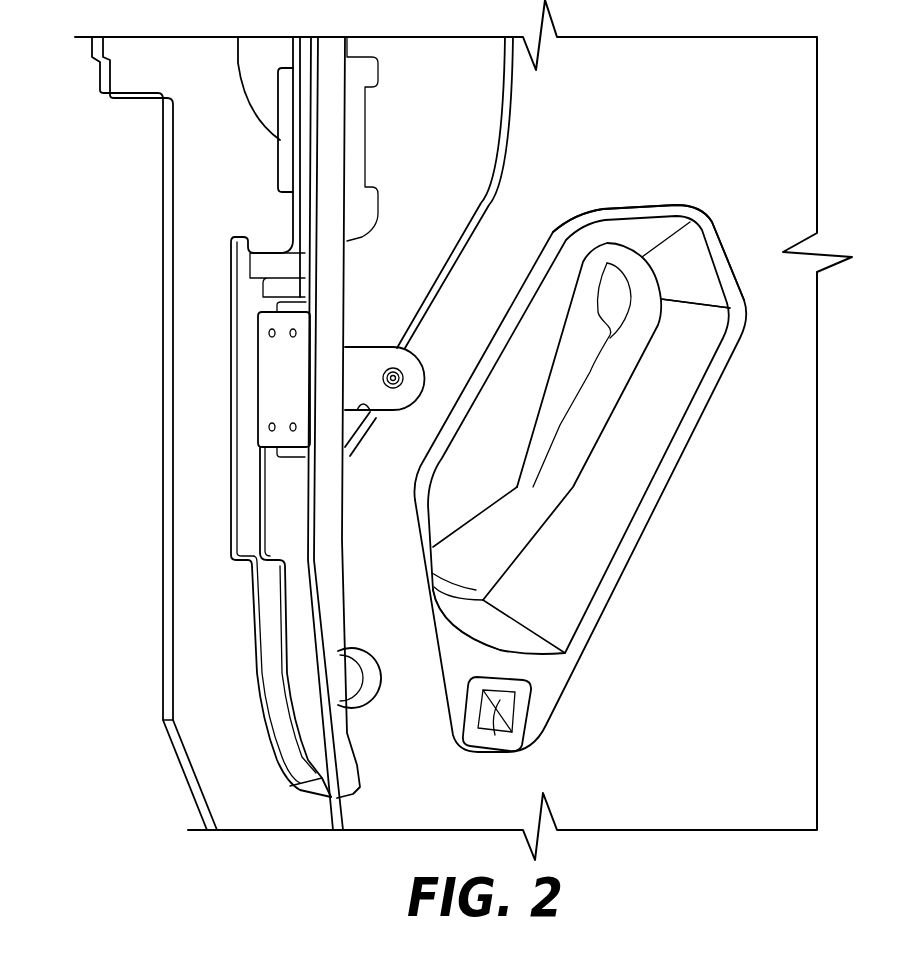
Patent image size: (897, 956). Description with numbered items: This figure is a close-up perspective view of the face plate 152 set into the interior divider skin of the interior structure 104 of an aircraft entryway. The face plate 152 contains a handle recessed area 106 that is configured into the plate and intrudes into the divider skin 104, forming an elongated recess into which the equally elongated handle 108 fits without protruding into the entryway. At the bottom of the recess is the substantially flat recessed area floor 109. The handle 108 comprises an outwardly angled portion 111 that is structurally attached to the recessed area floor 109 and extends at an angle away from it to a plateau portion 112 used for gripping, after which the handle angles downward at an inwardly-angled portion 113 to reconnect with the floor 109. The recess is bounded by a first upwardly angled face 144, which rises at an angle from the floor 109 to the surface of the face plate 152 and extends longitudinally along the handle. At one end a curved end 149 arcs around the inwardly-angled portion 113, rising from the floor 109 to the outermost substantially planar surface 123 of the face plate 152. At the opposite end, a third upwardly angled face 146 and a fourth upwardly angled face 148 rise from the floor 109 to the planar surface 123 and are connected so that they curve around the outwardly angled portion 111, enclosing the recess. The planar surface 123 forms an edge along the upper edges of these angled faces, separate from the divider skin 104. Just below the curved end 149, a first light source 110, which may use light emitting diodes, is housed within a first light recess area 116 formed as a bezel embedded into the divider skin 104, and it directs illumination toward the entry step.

The interior structure 104 is at (778, 168).
The handle recessed area 106 is at (699, 232).
The handle 108 is at (572, 439).
The recessed area floor 109 is at (578, 341).
The first light source 110 is at (490, 700).
The outwardly angled portion 111 is at (650, 305).
The plateau portion 112 is at (602, 408).
The inwardly-angled portion 113 is at (503, 543).
The first light recess area 116 is at (513, 712).
The outermost substantially planar surface 123 is at (650, 507).
The first upwardly angled face 144 is at (480, 397).
The third upwardly angled face 146 is at (653, 233).
The fourth upwardly angled face 148 is at (697, 269).
The curved end 149 is at (478, 633).
The face plate 152 is at (549, 260).